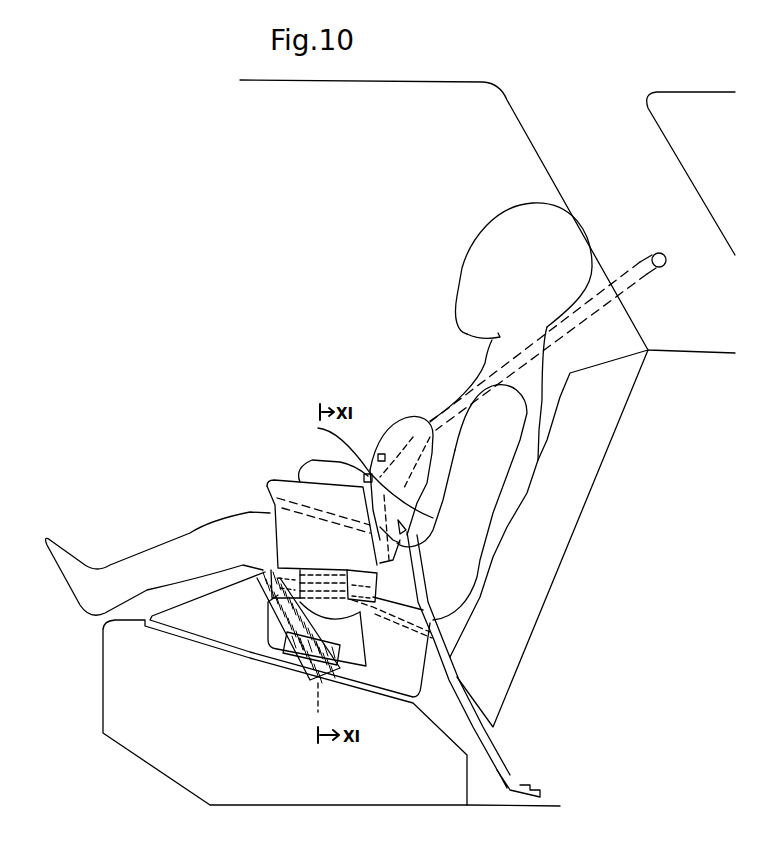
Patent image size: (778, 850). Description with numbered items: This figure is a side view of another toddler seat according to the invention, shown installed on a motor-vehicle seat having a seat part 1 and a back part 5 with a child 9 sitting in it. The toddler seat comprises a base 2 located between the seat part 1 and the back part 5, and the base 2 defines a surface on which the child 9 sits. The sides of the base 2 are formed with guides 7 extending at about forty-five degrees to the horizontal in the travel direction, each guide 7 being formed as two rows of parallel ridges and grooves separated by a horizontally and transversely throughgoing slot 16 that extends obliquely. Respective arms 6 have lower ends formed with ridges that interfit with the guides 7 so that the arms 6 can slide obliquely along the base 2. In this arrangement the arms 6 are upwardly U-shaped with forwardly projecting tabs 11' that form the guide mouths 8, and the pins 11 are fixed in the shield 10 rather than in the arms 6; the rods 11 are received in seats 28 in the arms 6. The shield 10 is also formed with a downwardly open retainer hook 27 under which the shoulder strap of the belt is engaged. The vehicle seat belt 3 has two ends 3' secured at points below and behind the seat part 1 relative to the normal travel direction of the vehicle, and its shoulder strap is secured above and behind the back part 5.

The seat part 1 is at (254, 751).
The base 2 is at (406, 689).
The seat belt 3 is at (483, 385).
The ends of the seat belt 3' is at (446, 664).
The back part 5 is at (560, 524).
The arms 6 is at (350, 637).
The guides 7 is at (263, 600).
The guide mouths 8 is at (350, 608).
The child 9 is at (522, 442).
The shield 10 is at (270, 480).
The pins 11 is at (291, 565).
The tabs 11' is at (350, 567).
The slot 16 is at (323, 670).
The retainer hook 27 is at (380, 457).
The seats 28 is at (270, 570).